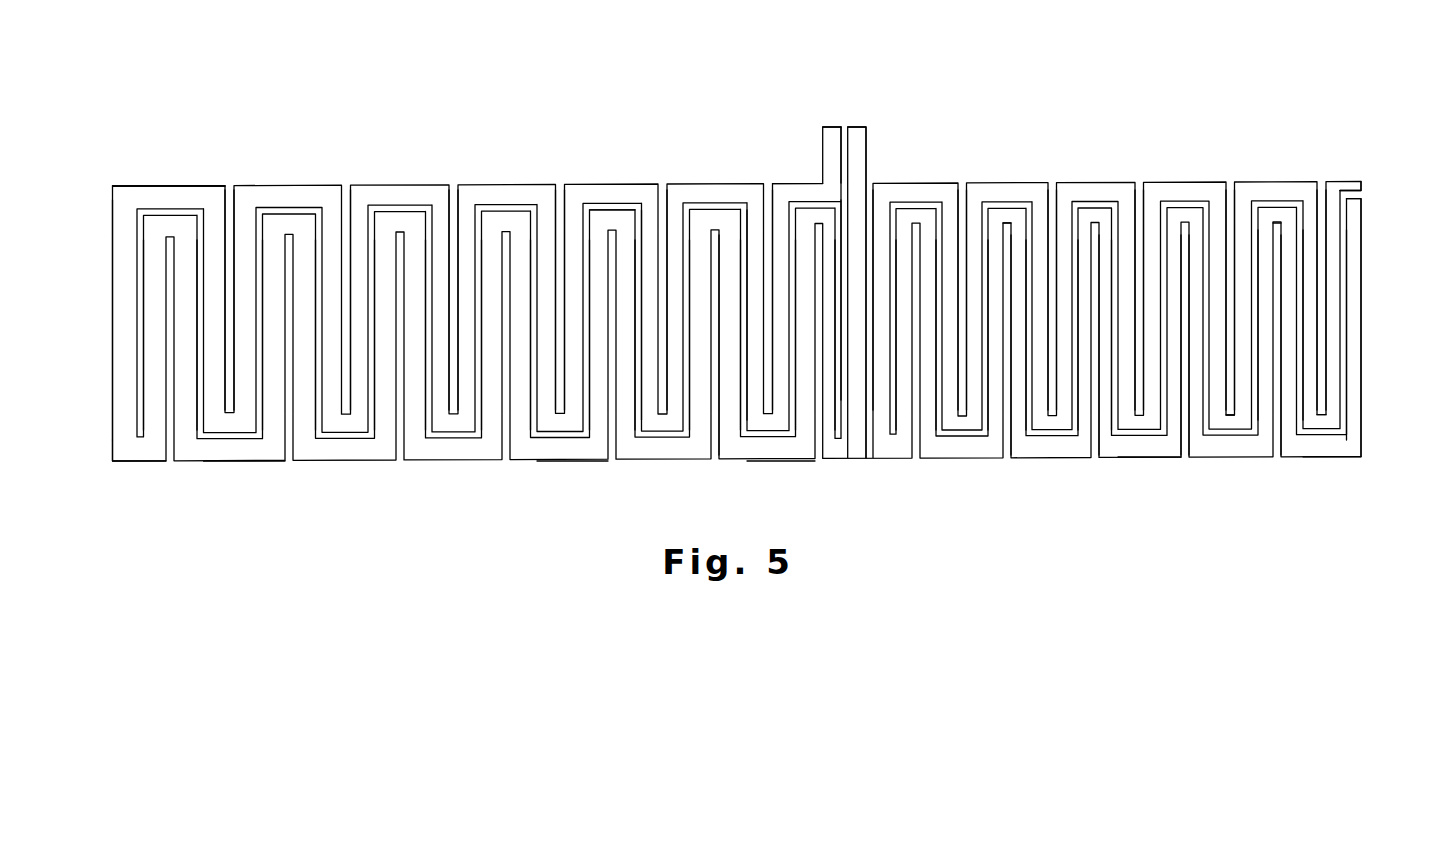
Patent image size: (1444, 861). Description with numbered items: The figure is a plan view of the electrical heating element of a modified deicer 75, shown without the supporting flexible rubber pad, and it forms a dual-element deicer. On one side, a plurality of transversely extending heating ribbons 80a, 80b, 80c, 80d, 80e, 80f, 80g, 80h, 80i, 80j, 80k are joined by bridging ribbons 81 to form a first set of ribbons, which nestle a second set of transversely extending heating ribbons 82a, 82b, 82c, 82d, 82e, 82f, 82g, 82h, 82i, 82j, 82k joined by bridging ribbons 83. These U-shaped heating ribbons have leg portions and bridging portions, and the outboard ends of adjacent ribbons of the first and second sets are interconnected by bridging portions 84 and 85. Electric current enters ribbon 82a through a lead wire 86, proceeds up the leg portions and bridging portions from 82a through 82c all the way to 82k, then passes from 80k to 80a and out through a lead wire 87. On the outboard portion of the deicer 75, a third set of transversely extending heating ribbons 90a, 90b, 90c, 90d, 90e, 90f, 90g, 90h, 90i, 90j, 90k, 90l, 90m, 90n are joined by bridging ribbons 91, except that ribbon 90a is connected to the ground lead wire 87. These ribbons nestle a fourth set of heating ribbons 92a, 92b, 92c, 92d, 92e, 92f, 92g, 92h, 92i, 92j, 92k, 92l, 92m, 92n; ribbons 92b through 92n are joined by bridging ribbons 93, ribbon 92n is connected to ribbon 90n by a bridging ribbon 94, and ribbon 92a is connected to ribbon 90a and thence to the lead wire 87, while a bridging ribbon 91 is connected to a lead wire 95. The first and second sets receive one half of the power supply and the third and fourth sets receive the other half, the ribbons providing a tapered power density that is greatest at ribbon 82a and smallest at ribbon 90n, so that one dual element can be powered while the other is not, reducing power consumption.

The deicer 75 is at (675, 69).
The heating ribbon 80a is at (1332, 203).
The heating ribbon 80b is at (1311, 200).
The heating ribbon 80c is at (1243, 213).
The heating ribbon 80d is at (1222, 207).
The heating ribbon 80e is at (1153, 223).
The heating ribbon 80f is at (1102, 215).
The heating ribbon 80g is at (1063, 215).
The heating ribbon 80h is at (1042, 214).
The heating ribbon 80i is at (975, 215).
The heating ribbon 80j is at (953, 215).
The heating ribbon 80k is at (880, 218).
The bridging ribbon 81 is at (1005, 212).
The heating ribbon 82a is at (1355, 262).
The heating ribbon 82b is at (1288, 287).
The heating ribbon 82c is at (1262, 310).
The heating ribbon 82d is at (1200, 224).
The heating ribbon 82e is at (1173, 224).
The heating ribbon 82f is at (1105, 420).
The heating ribbon 82g is at (1085, 420).
The heating ribbon 82h is at (1018, 420).
The heating ribbon 82i is at (996, 420).
The heating ribbon 82j is at (928, 420).
The heating ribbon 82k is at (904, 420).
The bridging ribbon 83 is at (1016, 215).
The bridging portion 84 is at (1229, 428).
The bridging portion 85 is at (1165, 450).
The lead wire 86 is at (1355, 210).
The lead wire 87 is at (862, 136).
The heating ribbon 90a is at (865, 150).
The heating ribbon 90b is at (781, 215).
The heating ribbon 90c is at (753, 214).
The heating ribbon 90d is at (731, 214).
The heating ribbon 90e is at (677, 220).
The heating ribbon 90f is at (610, 196).
The heating ribbon 90g is at (573, 224).
The heating ribbon 90h is at (547, 224).
The heating ribbon 90i is at (466, 224).
The heating ribbon 90j is at (442, 225).
The heating ribbon 90k is at (358, 228).
The heating ribbon 90l is at (245, 228).
The heating ribbon 90m is at (217, 227).
The heating ribbon 90n is at (122, 320).
The bridging ribbon 91 is at (148, 196).
The heating ribbon 92a is at (829, 420).
The heating ribbon 92b is at (803, 420).
The heating ribbon 92c is at (729, 420).
The heating ribbon 92d is at (700, 420).
The heating ribbon 92e is at (626, 420).
The heating ribbon 92f is at (600, 420).
The heating ribbon 92g is at (520, 420).
The heating ribbon 92h is at (492, 420).
The heating ribbon 92i is at (418, 420).
The heating ribbon 92j is at (385, 420).
The heating ribbon 92k is at (305, 418).
The heating ribbon 92l is at (275, 420).
The heating ribbon 92m is at (185, 422).
The heating ribbon 92n is at (157, 424).
The bridging ribbon 93 is at (237, 450).
The bridging ribbon 94 is at (140, 452).
The lead wire 95 is at (833, 136).